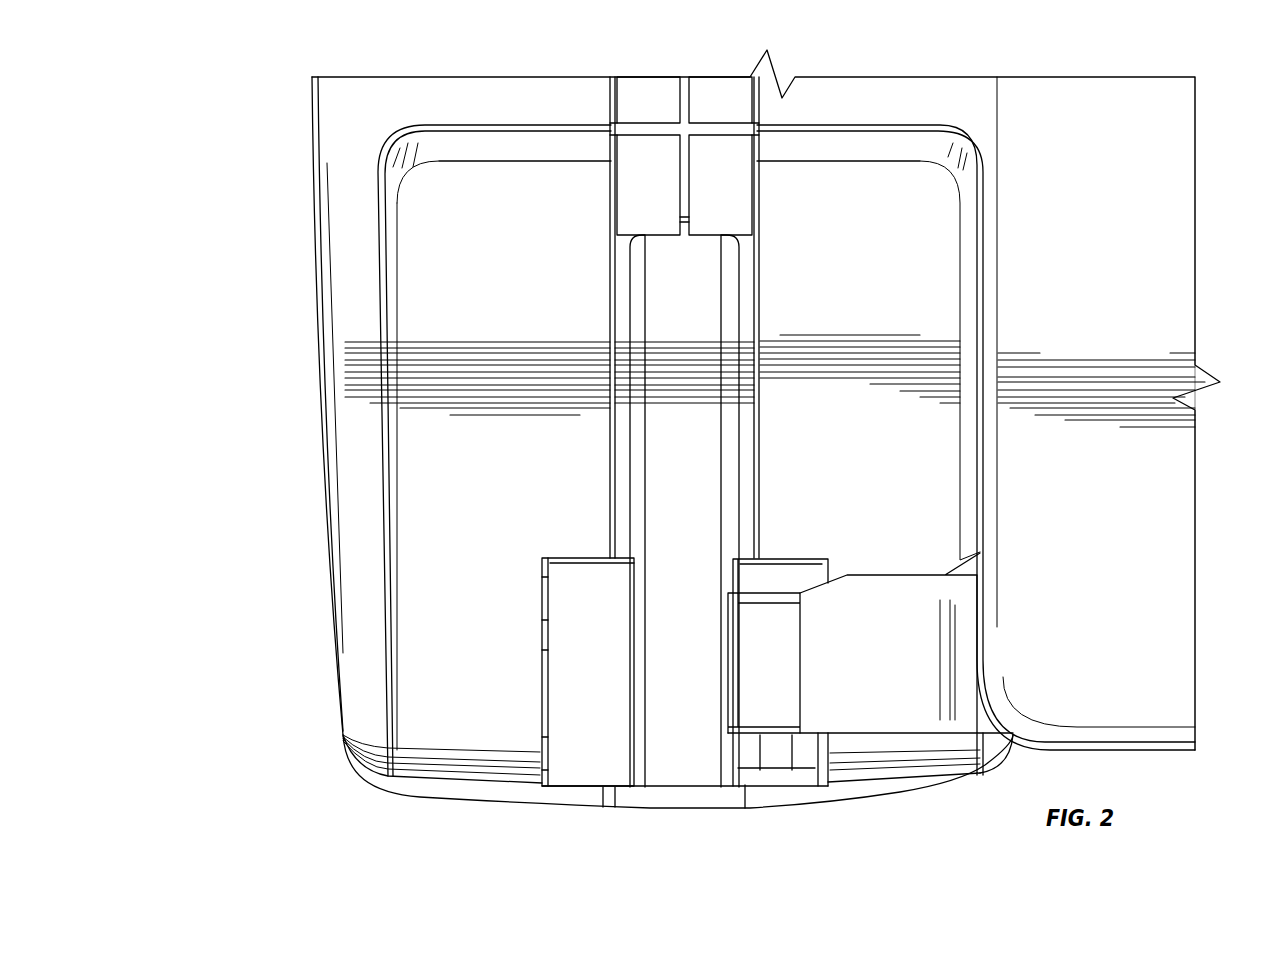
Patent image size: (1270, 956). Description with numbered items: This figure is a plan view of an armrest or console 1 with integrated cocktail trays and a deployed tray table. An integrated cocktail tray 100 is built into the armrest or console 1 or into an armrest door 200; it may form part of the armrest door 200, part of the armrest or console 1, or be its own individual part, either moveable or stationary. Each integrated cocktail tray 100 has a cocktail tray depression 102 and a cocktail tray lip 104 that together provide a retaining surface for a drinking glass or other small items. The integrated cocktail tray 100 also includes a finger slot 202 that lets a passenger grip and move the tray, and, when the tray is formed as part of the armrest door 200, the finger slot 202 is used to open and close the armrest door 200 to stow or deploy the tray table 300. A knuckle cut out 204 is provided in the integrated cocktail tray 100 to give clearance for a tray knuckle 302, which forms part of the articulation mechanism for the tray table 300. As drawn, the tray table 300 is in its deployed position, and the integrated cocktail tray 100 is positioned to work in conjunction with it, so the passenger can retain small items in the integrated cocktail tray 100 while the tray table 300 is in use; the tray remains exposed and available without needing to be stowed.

The armrest or console 1 is at (258, 130).
The integrated cocktail tray 100 is at (410, 613).
The cocktail tray depression 102 is at (470, 175).
The cocktail tray lip 104 is at (432, 147).
The armrest door 200 is at (350, 197).
The finger slot 202 is at (633, 240).
The knuckle cut out 204 is at (542, 742).
The tray table 300 is at (1160, 190).
The tray knuckle 302 is at (585, 740).